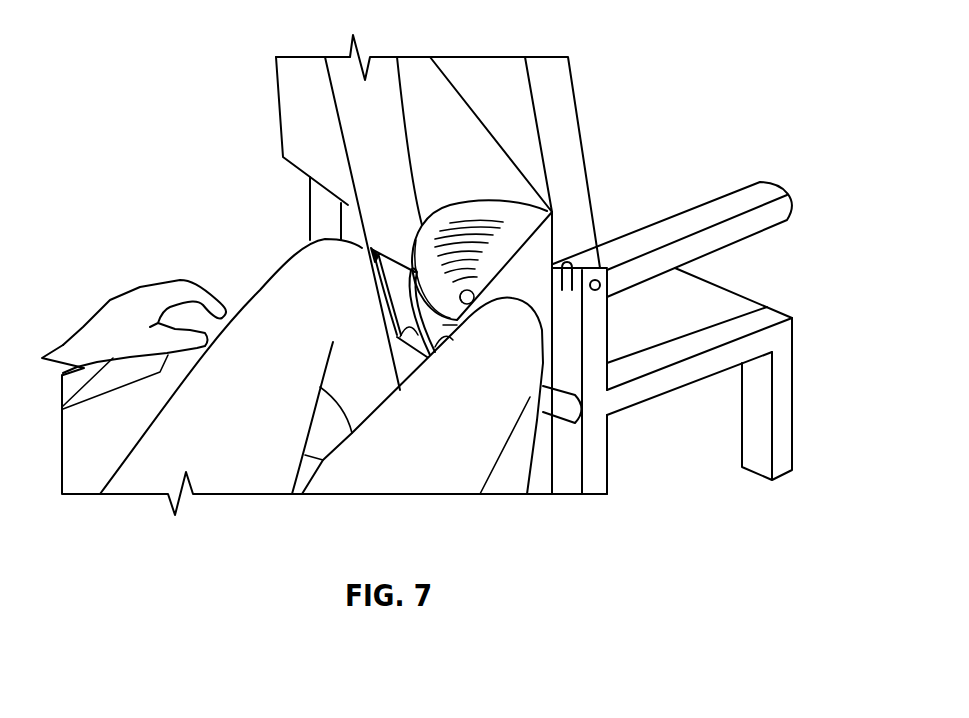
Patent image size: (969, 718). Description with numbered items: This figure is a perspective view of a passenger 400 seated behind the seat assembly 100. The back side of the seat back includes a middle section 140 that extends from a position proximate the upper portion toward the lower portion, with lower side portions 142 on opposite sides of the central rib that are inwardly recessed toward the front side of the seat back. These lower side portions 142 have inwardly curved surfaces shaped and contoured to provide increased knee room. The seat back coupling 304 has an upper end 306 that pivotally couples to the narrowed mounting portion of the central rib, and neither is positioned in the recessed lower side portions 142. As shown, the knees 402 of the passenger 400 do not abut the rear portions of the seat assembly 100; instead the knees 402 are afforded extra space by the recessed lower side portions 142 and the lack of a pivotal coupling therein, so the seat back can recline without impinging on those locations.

The seat assembly 100 is at (232, 86).
The middle section 140 is at (385, 120).
The lower side portions 142 is at (319, 200).
The seat back coupling 304 is at (523, 217).
The upper end 306 is at (430, 220).
The passenger 400 is at (205, 262).
The knees 402 is at (297, 267).